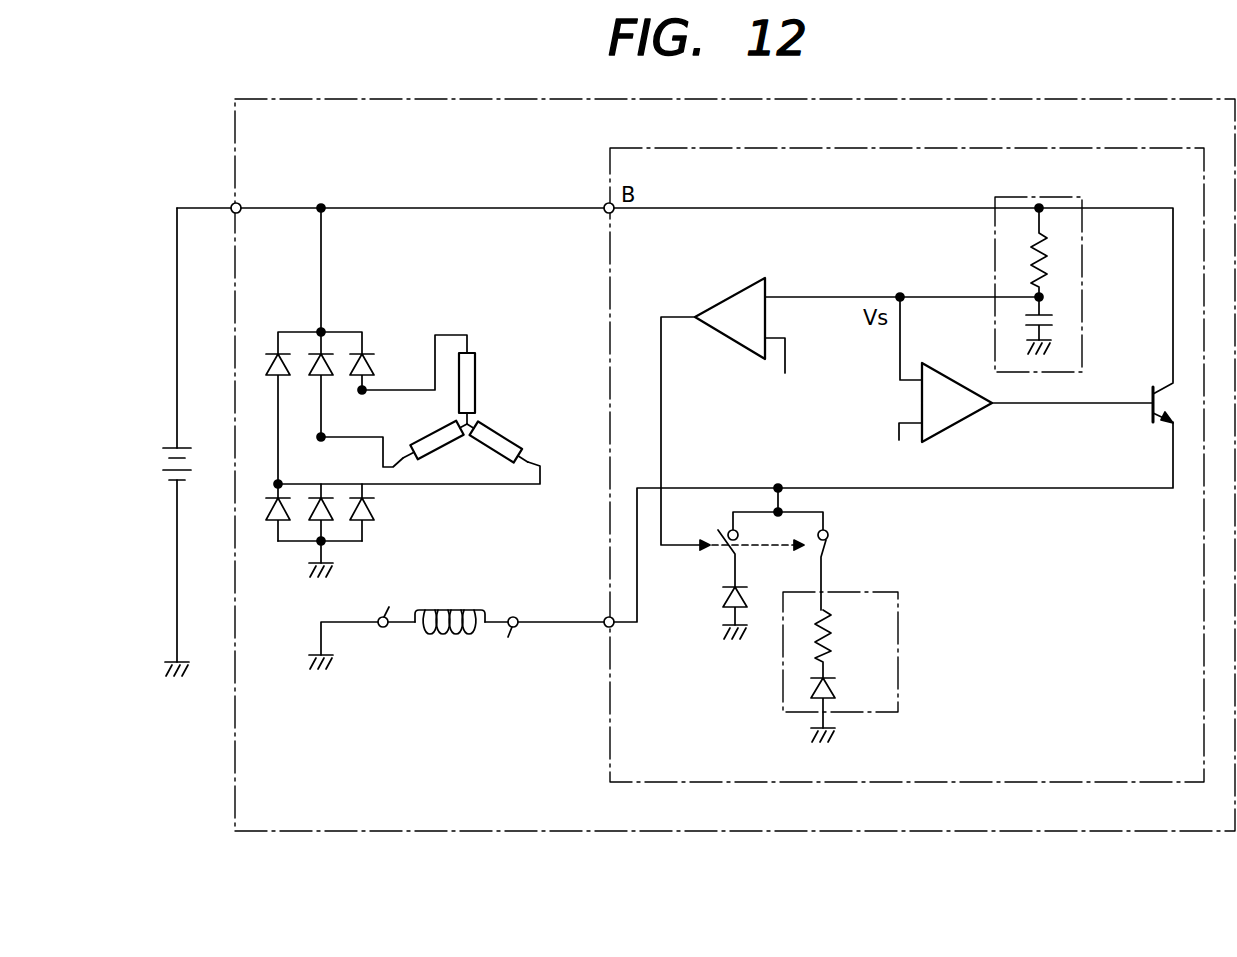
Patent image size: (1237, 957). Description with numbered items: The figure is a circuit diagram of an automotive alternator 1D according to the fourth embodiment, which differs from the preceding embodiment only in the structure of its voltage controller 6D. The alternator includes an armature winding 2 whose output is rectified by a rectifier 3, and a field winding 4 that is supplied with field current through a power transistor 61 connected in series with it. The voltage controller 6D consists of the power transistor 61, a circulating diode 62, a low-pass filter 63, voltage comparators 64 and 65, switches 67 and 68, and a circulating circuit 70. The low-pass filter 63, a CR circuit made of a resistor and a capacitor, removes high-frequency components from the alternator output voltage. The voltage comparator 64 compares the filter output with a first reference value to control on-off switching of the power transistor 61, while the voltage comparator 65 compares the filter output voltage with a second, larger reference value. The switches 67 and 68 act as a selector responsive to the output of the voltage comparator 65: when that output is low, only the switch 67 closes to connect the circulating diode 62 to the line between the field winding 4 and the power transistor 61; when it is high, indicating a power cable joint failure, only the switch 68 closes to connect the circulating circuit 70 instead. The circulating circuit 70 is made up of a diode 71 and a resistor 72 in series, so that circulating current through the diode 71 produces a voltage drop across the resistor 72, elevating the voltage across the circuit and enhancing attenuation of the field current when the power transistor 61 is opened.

The alternator 1D is at (1153, 99).
The voltage controller 6D is at (1130, 148).
The armature winding 2 is at (484, 418).
The rectifier 3 is at (335, 332).
The field winding 4 is at (465, 607).
The power transistor 61 is at (1160, 387).
The circulating diode 62 is at (718, 600).
The low-pass filter 63 is at (1082, 262).
The voltage comparator 64 is at (958, 373).
The voltage comparator 65 is at (735, 293).
The switch 67 is at (714, 558).
The switch 68 is at (832, 550).
The circulating circuit 70 is at (867, 667).
The diode 71 is at (838, 686).
The resistor 72 is at (832, 625).